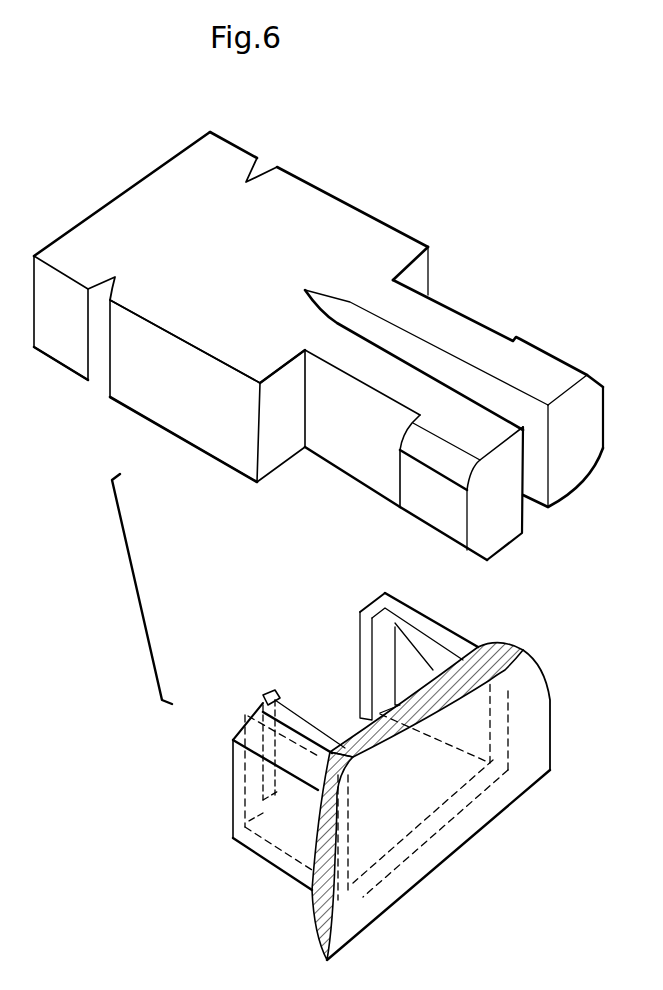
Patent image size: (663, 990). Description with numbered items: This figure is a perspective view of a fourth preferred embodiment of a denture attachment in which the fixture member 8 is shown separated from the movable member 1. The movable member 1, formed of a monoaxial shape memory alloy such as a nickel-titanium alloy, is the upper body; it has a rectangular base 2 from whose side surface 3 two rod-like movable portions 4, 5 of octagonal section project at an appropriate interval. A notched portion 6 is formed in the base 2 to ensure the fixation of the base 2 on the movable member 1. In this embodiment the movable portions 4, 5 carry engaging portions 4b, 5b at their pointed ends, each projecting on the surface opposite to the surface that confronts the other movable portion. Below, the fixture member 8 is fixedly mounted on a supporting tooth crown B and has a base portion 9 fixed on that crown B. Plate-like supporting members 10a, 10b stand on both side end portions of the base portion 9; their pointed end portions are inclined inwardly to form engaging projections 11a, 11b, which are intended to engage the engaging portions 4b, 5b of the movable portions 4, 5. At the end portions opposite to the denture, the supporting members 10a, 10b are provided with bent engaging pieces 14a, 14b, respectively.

The movable member 1 is at (418, 232).
The base 2 is at (318, 198).
The side surface 3 is at (418, 273).
The movable portion 4 is at (480, 333).
The engaging portion 4b is at (548, 355).
The movable portion 5 is at (345, 460).
The engaging portion 5b is at (417, 500).
The notched portion 6 is at (260, 163).
The fixture member 8 is at (258, 860).
The base portion 9 is at (357, 718).
The plate-like supporting member 10a is at (435, 670).
The plate-like supporting member 10b is at (243, 808).
The engaging projection 11a is at (422, 627).
The engaging projection 11b is at (288, 727).
The bent engaging piece 14a is at (367, 643).
The bent engaging piece 14b is at (265, 695).
The supporting tooth crown B is at (315, 920).